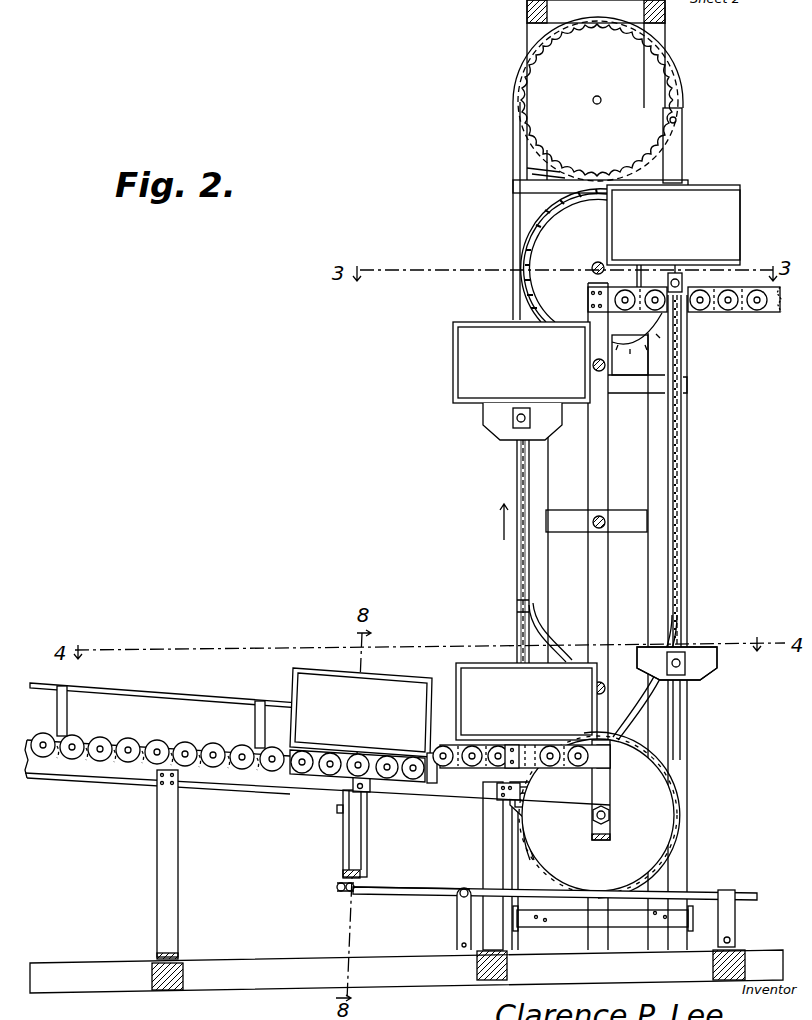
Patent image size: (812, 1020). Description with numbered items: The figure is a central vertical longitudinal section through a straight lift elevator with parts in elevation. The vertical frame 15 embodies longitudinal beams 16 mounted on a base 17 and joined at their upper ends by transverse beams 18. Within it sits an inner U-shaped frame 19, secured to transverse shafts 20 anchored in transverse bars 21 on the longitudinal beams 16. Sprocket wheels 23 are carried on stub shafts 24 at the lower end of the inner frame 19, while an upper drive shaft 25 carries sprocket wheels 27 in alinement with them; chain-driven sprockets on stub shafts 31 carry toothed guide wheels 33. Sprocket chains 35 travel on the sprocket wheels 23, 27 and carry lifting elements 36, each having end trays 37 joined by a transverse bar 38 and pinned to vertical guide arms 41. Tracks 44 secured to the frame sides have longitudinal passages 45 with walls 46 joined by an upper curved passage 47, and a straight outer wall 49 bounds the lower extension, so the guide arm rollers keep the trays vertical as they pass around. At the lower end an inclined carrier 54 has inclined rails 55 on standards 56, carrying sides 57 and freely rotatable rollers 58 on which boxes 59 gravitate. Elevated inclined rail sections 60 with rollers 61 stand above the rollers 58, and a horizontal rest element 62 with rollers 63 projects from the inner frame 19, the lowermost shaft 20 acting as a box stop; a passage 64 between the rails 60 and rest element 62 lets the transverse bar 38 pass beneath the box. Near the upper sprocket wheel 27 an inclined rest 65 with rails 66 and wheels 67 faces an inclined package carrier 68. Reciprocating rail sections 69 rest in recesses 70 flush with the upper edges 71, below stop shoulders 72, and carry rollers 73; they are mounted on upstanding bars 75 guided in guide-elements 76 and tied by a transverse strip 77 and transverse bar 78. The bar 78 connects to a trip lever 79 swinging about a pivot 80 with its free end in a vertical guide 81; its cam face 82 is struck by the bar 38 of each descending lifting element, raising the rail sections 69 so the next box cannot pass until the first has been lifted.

The vertical frame 15 is at (666, 467).
The longitudinal beams 16 is at (537, 470).
The base 17 is at (273, 985).
The transverse beams 18 is at (525, 12).
The inner U-shaped frame 19 is at (603, 560).
The transverse shafts 20 is at (592, 365).
The transverse bars 21 is at (628, 366).
The sprocket wheels 23 is at (640, 850).
The stub shafts 24 is at (612, 815).
The upper drive shaft 25 is at (596, 262).
The sprocket wheels 27 is at (543, 248).
The stub shafts 31 is at (600, 97).
The toothed guide wheels 33 is at (557, 125).
The sprocket chains 35 is at (527, 575).
The lifting elements 36 is at (499, 428).
The end trays 37 is at (700, 647).
The transverse bar 38 is at (680, 690).
The guide arms 41 is at (517, 285).
The tracks 44 is at (684, 86).
The longitudinal passages 45 is at (520, 150).
The walls 46 is at (532, 174).
The curved passage 47 is at (540, 45).
The outer wall 49 is at (675, 972).
The inclined carrier 54 is at (116, 786).
The inclined rails 55 is at (250, 793).
The standards 56 is at (165, 901).
The sides 57 is at (152, 693).
The rollers 58 is at (157, 737).
The boxes 59 is at (320, 667).
The elevated inclined rail sections 60 is at (465, 775).
The rollers 61 is at (447, 755).
The rest element 62 is at (600, 768).
The rollers 63 is at (548, 740).
The passage 64 is at (497, 797).
The inclined rest 65 is at (648, 318).
The rails 66 is at (668, 302).
The wheels 67 is at (670, 283).
The inclined package carrier 68 is at (750, 310).
The rail sections 69 is at (298, 800).
The recesses 70 is at (268, 797).
The upper edges 71 is at (232, 744).
The stop shoulders 72 is at (430, 745).
The rollers 73 is at (325, 750).
The upstanding bars 75 is at (360, 830).
The guide-elements 76 is at (345, 812).
The transverse strip 77 is at (375, 790).
The transverse bar 78 is at (338, 873).
The trip lever 79 is at (380, 896).
The pivot 80 is at (460, 900).
The vertical guide 81 is at (735, 915).
The cam face 82 is at (640, 893).